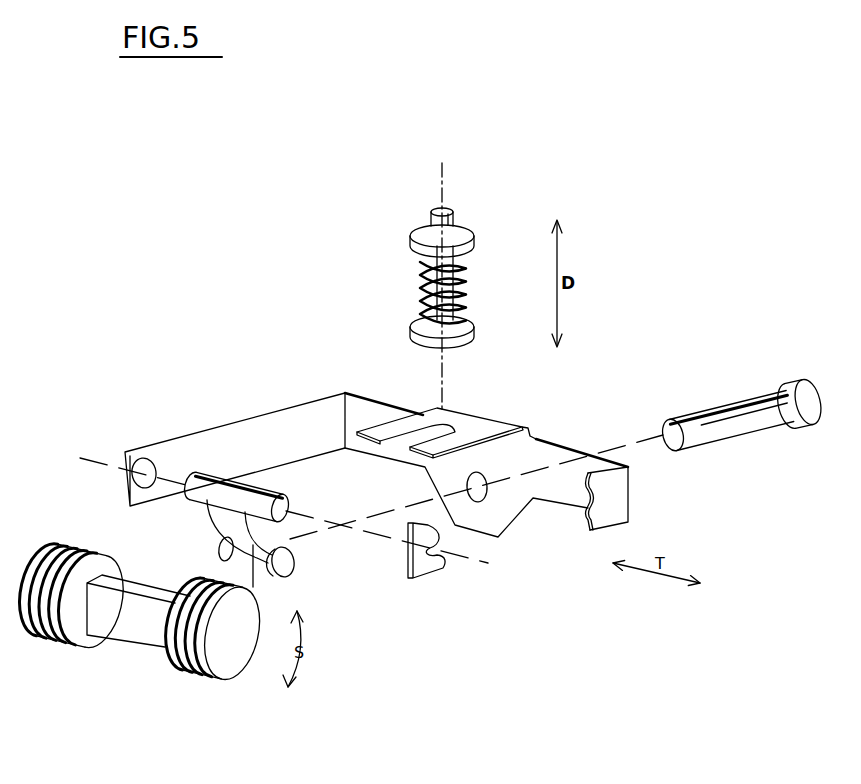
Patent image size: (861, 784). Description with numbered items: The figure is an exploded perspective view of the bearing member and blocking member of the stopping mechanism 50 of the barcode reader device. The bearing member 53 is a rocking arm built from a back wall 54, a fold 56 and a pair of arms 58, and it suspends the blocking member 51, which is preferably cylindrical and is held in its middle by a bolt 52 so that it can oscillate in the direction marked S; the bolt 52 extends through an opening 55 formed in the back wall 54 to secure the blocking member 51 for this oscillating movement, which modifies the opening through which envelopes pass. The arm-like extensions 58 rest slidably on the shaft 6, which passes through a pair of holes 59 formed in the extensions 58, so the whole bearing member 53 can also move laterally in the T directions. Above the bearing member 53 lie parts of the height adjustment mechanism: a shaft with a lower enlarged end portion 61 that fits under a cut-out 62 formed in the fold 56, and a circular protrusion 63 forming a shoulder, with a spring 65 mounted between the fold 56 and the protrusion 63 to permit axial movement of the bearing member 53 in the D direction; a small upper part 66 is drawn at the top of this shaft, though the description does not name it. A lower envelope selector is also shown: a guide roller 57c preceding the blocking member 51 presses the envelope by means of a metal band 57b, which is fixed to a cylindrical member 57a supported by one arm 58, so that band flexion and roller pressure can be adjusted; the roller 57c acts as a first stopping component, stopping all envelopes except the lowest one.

The shaft 6 is at (90, 455).
The stopping mechanism 50 is at (575, 586).
The blocking member 51 is at (233, 652).
The bolt 52 is at (759, 430).
The bearing member 53 is at (645, 403).
The back wall 54 is at (551, 450).
The opening 55 is at (492, 486).
The fold 56 is at (491, 423).
The cylindrical member 57a is at (190, 497).
The metal band 57b is at (222, 521).
The guide roller 57c is at (295, 577).
The arms 58 is at (287, 419).
The holes 59 is at (133, 472).
The lower enlarged end portion 61 is at (417, 346).
The cut-out 62 is at (365, 440).
The circular protrusion 63 is at (410, 243).
The spring 65 is at (420, 292).
The guide pin 66 is at (455, 218).